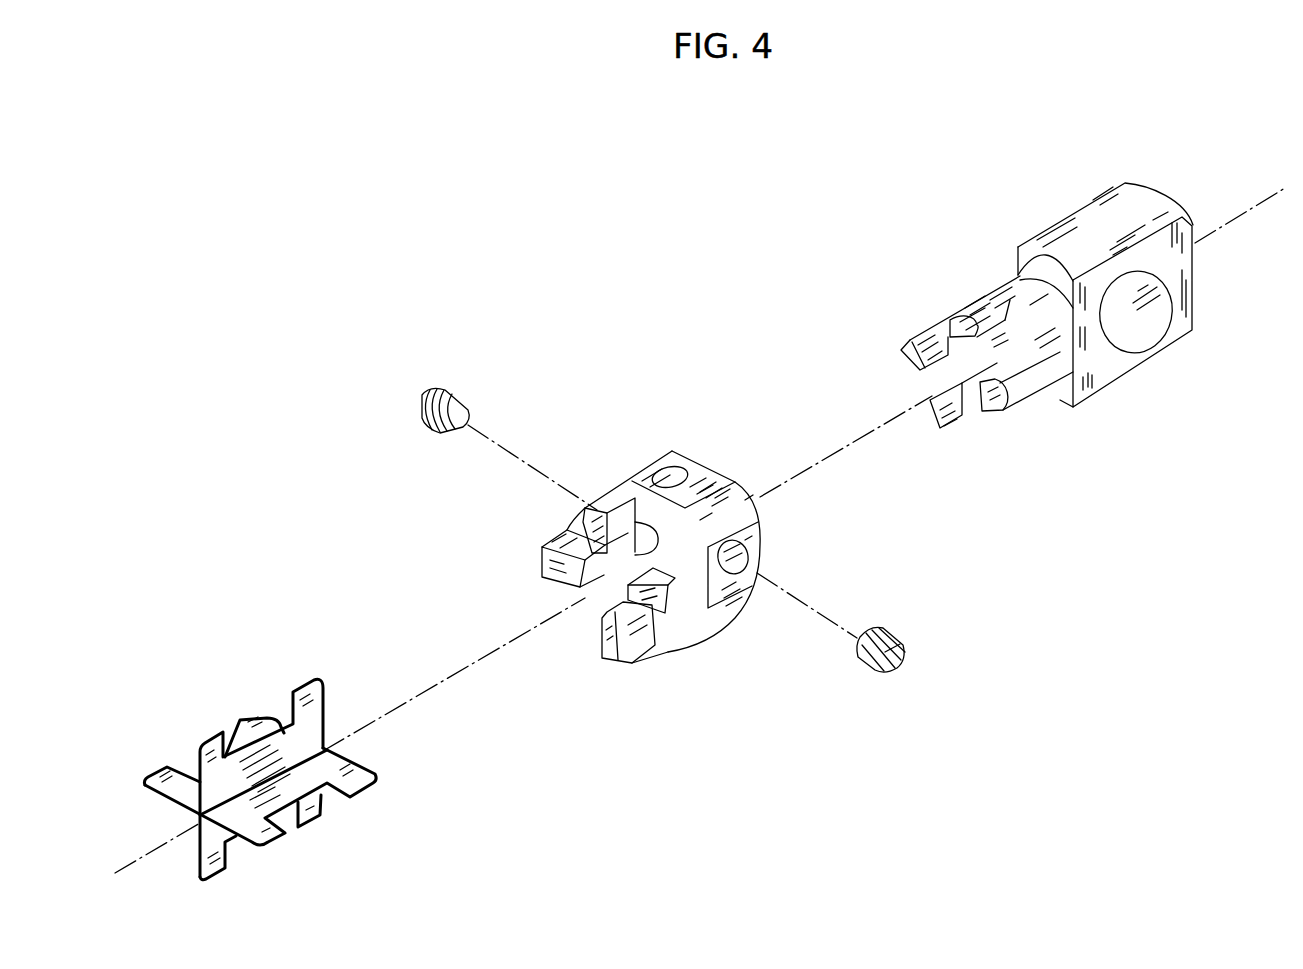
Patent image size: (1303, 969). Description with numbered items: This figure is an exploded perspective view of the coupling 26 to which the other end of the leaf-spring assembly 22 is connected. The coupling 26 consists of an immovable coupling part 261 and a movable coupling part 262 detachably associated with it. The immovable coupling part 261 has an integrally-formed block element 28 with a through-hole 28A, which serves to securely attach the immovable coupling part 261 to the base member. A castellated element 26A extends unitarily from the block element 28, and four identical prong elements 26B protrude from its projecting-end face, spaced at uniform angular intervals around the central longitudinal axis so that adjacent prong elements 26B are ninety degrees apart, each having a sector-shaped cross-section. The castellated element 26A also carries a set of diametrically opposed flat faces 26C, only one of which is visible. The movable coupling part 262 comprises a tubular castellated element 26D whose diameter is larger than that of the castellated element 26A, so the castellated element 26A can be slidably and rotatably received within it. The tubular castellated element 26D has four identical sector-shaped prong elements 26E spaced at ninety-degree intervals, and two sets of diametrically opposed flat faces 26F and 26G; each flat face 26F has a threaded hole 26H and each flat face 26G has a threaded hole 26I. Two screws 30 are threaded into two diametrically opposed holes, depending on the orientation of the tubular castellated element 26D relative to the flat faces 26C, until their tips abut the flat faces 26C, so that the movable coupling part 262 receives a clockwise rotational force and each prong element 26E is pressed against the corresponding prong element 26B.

The leaf-spring assembly 22 is at (213, 690).
The coupling 26 is at (630, 405).
The immovable coupling part 261 is at (990, 285).
The movable coupling part 262 is at (613, 476).
The castellated element 26A is at (1028, 375).
The prong elements 26B is at (965, 333).
The flat faces 26C is at (1055, 355).
The tubular castellated element 26D is at (757, 520).
The prong elements 26E is at (574, 517).
The flat faces 26F is at (765, 565).
The flat faces 26G is at (712, 476).
The threaded hole 26H is at (735, 575).
The threaded hole 26I is at (670, 470).
The block element 28 is at (1153, 275).
The through-hole 28A is at (1152, 321).
The screws 30 is at (420, 402).